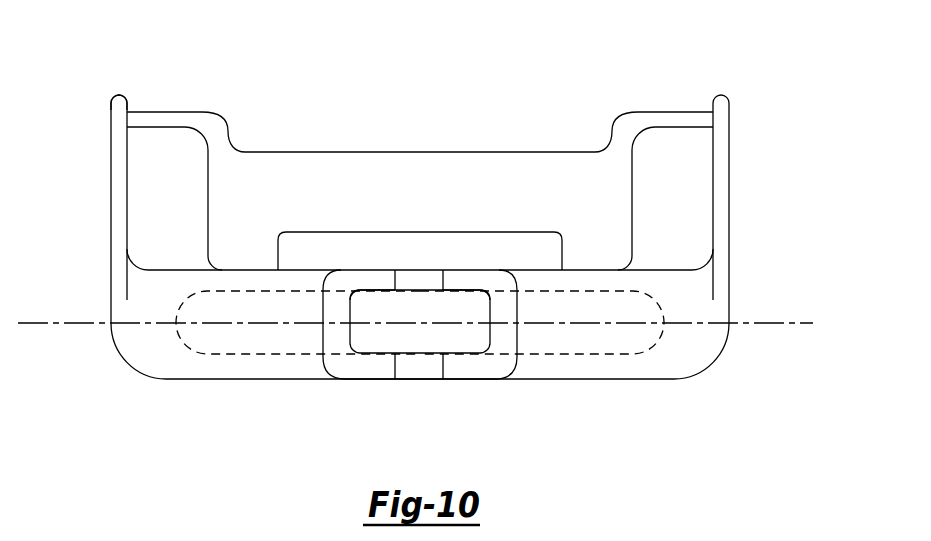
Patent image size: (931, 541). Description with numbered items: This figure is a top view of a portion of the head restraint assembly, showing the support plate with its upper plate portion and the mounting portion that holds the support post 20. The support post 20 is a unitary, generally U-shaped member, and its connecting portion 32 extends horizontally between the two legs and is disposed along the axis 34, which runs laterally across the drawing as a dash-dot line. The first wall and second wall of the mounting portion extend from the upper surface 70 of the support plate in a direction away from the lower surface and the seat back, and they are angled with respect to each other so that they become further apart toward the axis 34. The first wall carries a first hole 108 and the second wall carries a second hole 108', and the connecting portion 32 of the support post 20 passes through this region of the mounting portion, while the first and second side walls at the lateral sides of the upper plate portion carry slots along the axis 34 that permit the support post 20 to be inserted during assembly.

The axis 34 is at (753, 323).
The second hole 108' is at (362, 245).
The first hole 108 is at (477, 245).
The support post 20 is at (420, 362).
The connecting portion 32 is at (403, 335).
The upper surface 70 is at (431, 367).